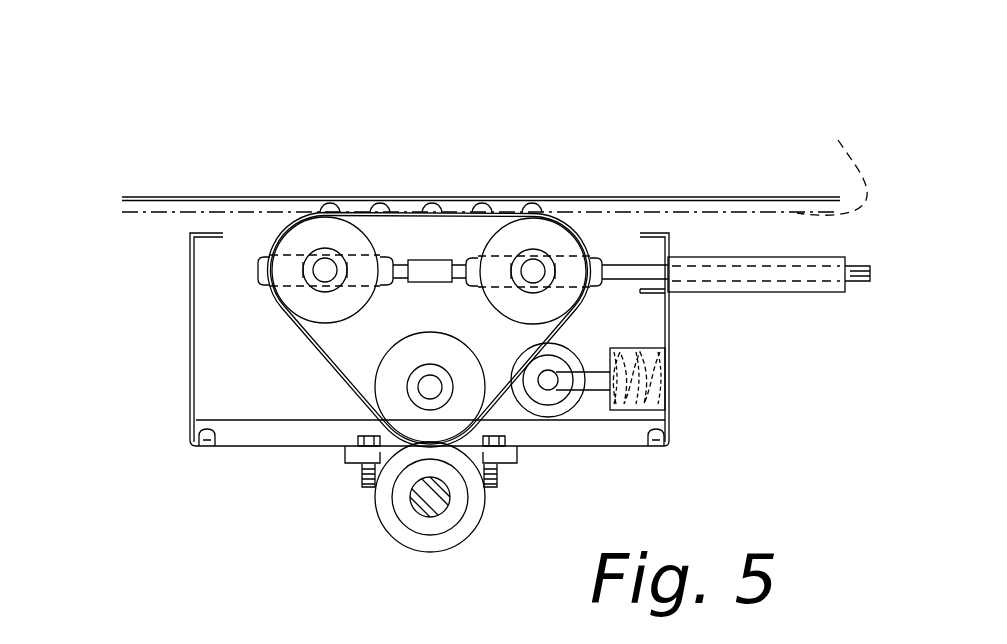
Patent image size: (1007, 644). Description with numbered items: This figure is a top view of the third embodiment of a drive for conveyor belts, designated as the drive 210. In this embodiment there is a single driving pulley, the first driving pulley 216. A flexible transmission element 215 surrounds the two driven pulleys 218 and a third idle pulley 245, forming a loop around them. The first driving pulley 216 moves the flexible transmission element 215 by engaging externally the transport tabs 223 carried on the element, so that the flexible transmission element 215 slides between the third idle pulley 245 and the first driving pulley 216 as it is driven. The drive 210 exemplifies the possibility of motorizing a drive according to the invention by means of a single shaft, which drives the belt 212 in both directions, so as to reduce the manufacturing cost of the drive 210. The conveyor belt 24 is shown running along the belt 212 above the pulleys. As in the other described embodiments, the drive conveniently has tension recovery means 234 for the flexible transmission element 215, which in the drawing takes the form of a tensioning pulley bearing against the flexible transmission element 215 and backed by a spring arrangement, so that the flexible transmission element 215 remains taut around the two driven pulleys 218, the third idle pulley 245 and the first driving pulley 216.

The drive 210 is at (210, 171).
The belt 212 is at (745, 196).
The conveyor belt 24 is at (832, 149).
The driven pulleys 218 is at (312, 240).
The transport tabs 223 is at (548, 181).
The flexible transmission element 215 is at (294, 335).
The third idle pulley 245 is at (397, 387).
The first driving pulley 216 is at (403, 520).
The tension recovery means 234 is at (596, 398).